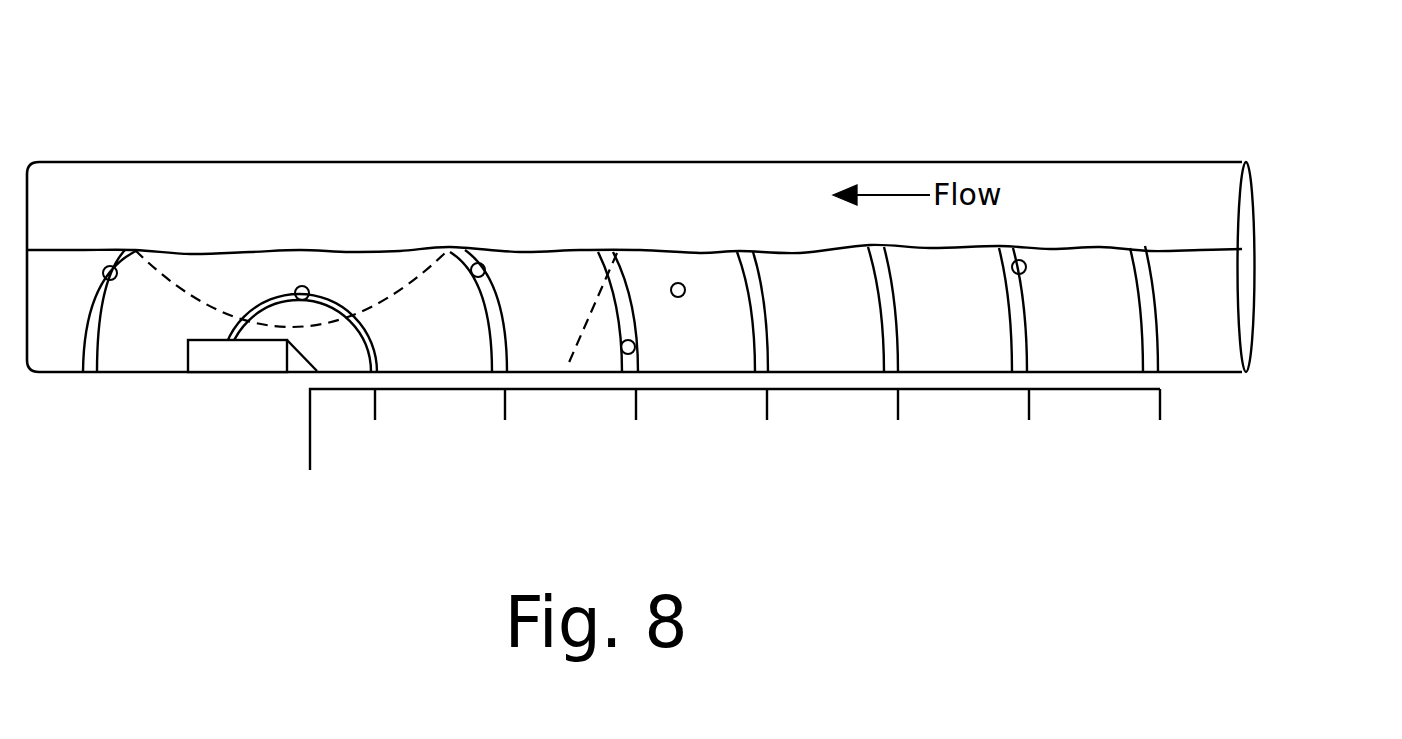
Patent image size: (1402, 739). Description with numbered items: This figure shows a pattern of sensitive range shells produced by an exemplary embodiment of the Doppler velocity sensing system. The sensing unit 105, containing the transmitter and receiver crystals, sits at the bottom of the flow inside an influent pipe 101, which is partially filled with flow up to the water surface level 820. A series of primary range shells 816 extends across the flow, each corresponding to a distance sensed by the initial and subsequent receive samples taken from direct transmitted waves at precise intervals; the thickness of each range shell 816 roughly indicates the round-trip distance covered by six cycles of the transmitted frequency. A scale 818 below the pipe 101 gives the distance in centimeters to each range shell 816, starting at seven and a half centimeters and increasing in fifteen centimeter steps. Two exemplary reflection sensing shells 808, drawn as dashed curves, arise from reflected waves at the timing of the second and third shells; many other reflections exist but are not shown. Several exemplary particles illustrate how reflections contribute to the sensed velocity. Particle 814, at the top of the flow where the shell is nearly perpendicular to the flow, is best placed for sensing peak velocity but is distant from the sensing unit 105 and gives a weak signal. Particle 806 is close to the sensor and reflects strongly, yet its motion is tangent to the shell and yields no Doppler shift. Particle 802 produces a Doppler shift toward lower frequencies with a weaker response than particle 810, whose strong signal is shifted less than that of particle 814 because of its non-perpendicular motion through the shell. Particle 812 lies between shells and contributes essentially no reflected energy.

The pipe 101 is at (1127, 161).
The sensing unit 105 is at (245, 357).
The particle 802 is at (103, 268).
The particle 806 is at (300, 286).
The reflection sensing shells 808 is at (392, 293).
The particle 810 is at (481, 264).
The particle 812 is at (682, 284).
The particle 814 is at (1020, 260).
The range shells 816 is at (1032, 330).
The scale 818 is at (1075, 388).
The water surface level 820 is at (1192, 250).